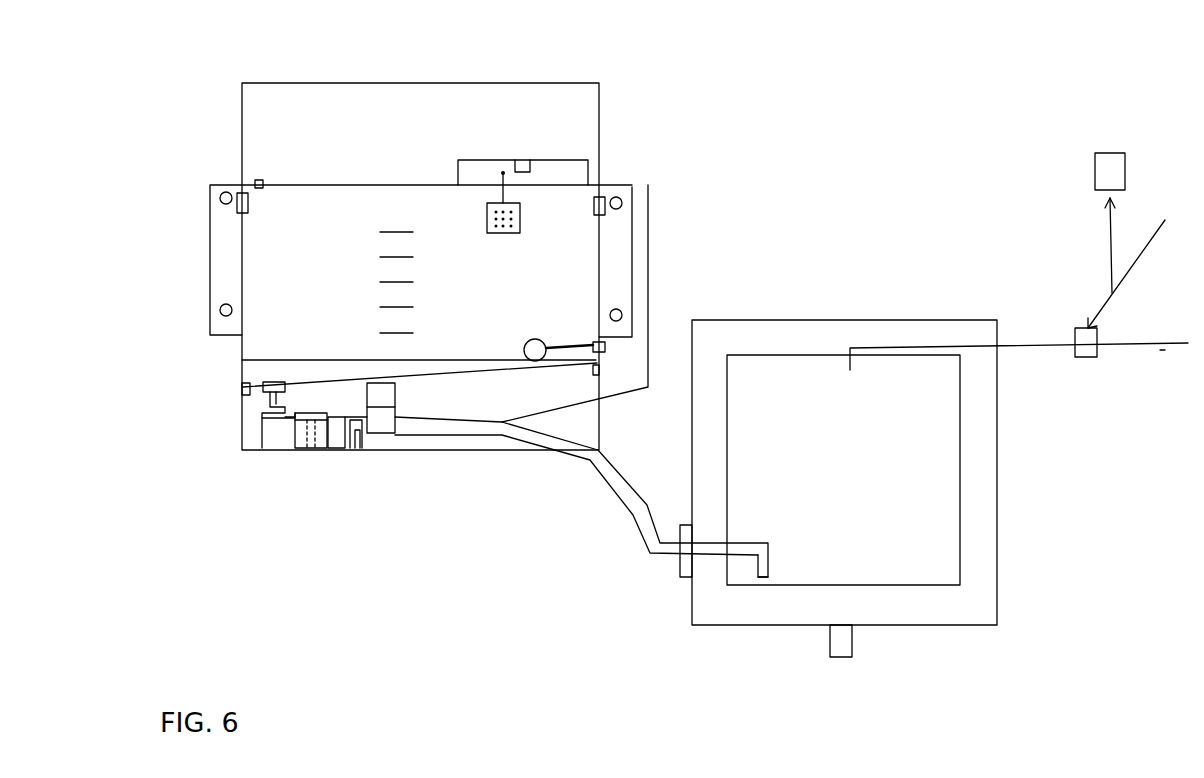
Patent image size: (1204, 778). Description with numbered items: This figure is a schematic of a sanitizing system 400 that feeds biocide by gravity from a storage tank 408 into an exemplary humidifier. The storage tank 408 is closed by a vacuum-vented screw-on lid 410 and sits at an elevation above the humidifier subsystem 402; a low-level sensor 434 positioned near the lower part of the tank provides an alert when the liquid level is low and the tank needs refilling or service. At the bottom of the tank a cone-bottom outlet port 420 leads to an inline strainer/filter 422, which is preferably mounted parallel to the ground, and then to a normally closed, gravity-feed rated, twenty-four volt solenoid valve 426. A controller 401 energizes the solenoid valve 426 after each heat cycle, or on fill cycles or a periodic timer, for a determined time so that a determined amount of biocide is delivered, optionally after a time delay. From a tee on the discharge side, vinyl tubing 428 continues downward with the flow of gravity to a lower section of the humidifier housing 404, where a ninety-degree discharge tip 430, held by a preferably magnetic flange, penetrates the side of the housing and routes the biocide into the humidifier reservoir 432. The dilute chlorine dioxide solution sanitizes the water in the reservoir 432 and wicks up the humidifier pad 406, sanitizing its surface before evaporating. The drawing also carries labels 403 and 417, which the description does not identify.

The sanitizing system 400 is at (863, 75).
The controller 401 is at (1112, 148).
The humidifier subsystem 402 is at (923, 307).
The communication link 403 is at (1120, 223).
The humidifier housing 404 is at (982, 335).
The humidifier pad 406 is at (930, 472).
The storage tank 408 is at (263, 333).
The vacuum-vented screw-on lid 410 is at (480, 158).
The base bracket 417 is at (265, 427).
The cone-bottom outlet port 420 is at (262, 393).
The strainer/filter 422 is at (302, 448).
The solenoid valve 426 is at (383, 417).
The vinyl tubing 428 is at (587, 463).
The discharge tip 430 is at (768, 577).
The humidifier reservoir 432 is at (925, 614).
The low-level sensor 434 is at (572, 343).